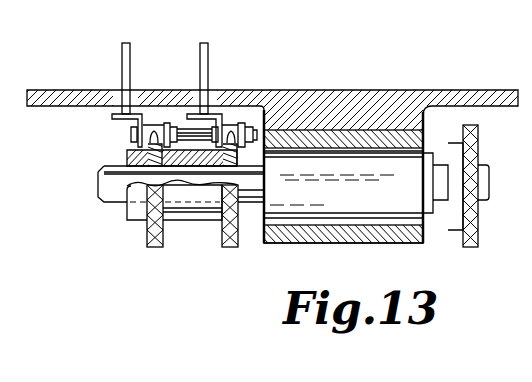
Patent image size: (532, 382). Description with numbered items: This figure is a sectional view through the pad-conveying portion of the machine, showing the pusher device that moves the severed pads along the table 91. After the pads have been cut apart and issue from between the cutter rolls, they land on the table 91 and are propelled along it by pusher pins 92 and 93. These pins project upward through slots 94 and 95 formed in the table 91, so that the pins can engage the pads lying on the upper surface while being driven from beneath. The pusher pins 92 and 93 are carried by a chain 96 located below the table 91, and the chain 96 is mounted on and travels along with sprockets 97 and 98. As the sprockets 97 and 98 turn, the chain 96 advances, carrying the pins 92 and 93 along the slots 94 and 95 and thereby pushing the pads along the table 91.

The table 91 is at (356, 97).
The pusher pin 92 is at (122, 53).
The pusher pin 93 is at (208, 53).
The slot 94 is at (118, 90).
The slot 95 is at (213, 95).
The chain 96 is at (180, 128).
The sprocket 97 is at (147, 242).
The sprocket 98 is at (222, 243).